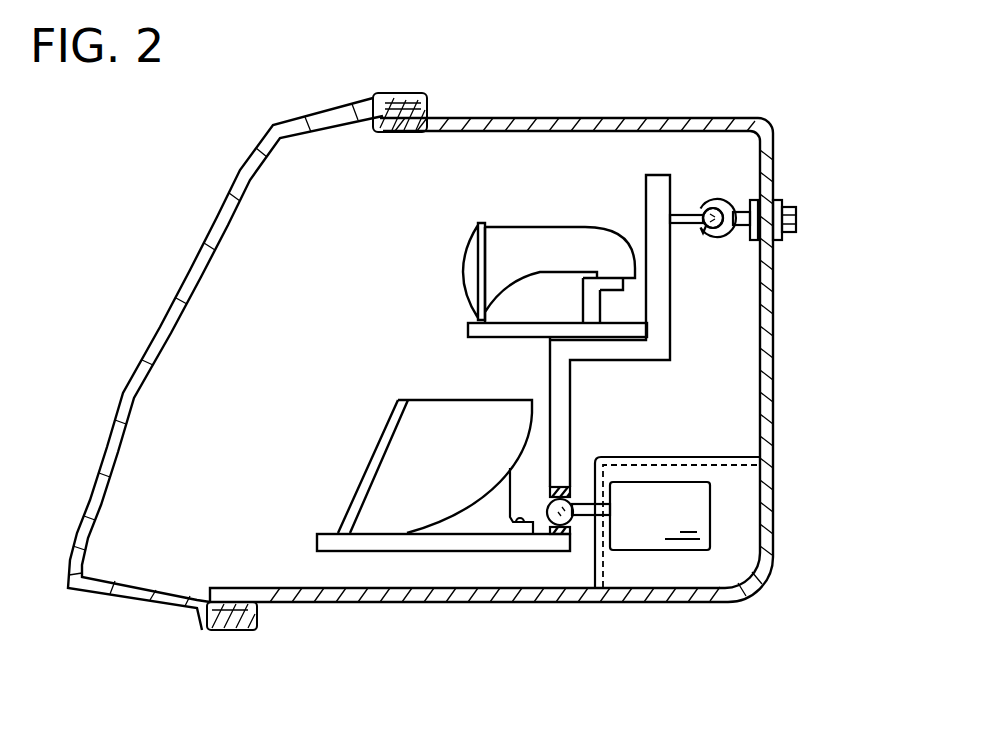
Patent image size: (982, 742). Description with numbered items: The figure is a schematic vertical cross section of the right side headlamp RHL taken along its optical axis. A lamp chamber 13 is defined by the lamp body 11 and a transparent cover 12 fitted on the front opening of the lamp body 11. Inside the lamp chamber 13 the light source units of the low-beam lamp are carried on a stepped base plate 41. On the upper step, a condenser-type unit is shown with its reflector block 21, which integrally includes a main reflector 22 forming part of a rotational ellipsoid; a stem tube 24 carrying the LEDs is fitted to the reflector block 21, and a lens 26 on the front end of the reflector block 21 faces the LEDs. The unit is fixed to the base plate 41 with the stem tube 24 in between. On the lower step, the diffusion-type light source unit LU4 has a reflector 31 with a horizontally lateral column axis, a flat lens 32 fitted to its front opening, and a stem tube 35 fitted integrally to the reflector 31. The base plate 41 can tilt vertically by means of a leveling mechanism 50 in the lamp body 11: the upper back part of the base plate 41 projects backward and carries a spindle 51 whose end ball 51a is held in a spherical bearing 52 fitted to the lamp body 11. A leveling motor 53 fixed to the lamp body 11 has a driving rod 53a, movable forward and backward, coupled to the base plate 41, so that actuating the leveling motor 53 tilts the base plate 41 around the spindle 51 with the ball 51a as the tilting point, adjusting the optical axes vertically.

The lamp body 11 is at (478, 118).
The transparent cover 12 is at (177, 272).
The lamp chamber 13 is at (192, 515).
The reflector block 21 is at (527, 250).
The main reflector 22 is at (592, 258).
The stem tube 24 is at (533, 339).
The lens 26 is at (472, 272).
The reflector 31 is at (433, 433).
The flat lens 32 is at (365, 480).
The stem tube 35 is at (480, 517).
The base plate 41 is at (367, 543).
The leveling mechanism 50 is at (573, 568).
The spindle 51 is at (687, 210).
The ball 51a is at (705, 230).
The spherical bearing 52 is at (797, 220).
The leveling motor 53 is at (655, 528).
The driving rod 53a is at (580, 498).
The right side headlamp RHL is at (210, 197).
The diffusion-type light source unit LU4 is at (370, 413).